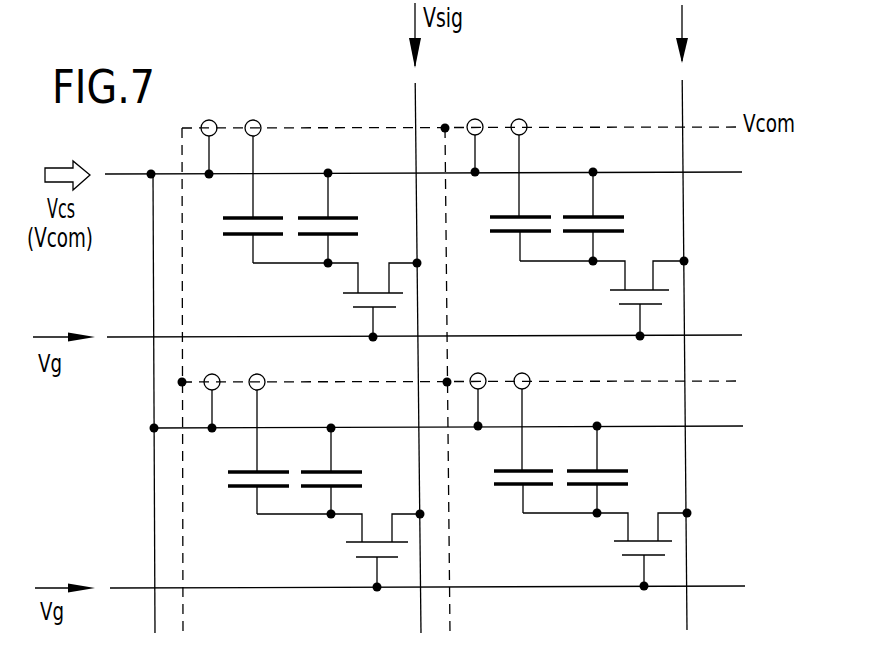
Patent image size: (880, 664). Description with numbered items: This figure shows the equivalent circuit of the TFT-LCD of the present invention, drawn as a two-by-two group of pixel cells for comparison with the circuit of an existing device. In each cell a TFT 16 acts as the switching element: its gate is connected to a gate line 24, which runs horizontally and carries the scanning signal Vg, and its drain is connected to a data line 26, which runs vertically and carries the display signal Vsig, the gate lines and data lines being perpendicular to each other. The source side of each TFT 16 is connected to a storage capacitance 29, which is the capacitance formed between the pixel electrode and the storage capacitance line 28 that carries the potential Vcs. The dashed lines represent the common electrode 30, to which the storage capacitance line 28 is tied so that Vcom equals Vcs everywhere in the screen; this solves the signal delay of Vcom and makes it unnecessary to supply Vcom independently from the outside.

The TFT 16 is at (672, 553).
The gate line 24 is at (725, 335).
The data line 26 is at (690, 617).
The storage capacitance line 28 is at (722, 172).
The storage capacitance 29 is at (632, 222).
The common electrode 30 is at (733, 381).